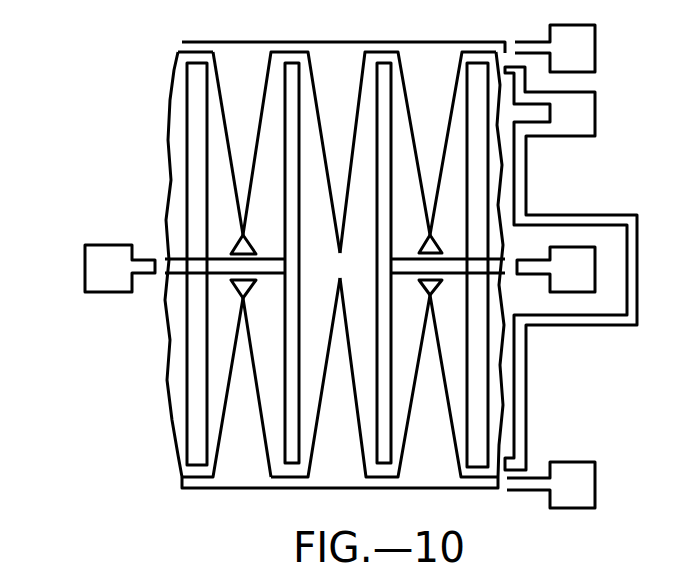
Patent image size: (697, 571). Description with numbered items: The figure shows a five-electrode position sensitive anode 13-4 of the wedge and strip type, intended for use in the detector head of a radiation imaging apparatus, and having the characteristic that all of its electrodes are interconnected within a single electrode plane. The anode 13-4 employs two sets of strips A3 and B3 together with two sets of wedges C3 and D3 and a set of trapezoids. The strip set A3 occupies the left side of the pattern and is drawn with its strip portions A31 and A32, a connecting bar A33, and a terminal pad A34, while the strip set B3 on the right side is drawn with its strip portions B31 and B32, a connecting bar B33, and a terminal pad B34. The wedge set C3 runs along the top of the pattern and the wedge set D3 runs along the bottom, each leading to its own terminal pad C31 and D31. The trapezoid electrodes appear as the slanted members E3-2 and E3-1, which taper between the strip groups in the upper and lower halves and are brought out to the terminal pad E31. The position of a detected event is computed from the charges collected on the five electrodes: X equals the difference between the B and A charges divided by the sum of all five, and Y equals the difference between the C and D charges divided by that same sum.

The five-electrode position sensitive anode 13-4 is at (102, 171).
The set of wedges C3 is at (340, 41).
The set of wedges D3 is at (283, 490).
The set of strips A3 is at (186, 344).
The left inner electrode A31 is at (197, 408).
The left middle electrode A32 is at (293, 470).
The left center bar A33 is at (223, 268).
The left connection pad A34 is at (98, 270).
The set of strips B3 is at (492, 372).
The right inner electrode B31 is at (478, 437).
The right middle electrode B32 is at (387, 470).
The right center bar B33 is at (452, 268).
The right connection pad B34 is at (588, 268).
The lower slanted electrode E3-1 is at (259, 390).
The upper slanted electrode E3-2 is at (229, 158).
The top connection pad C31 is at (586, 54).
The E electrode connection pad E31 is at (586, 118).
The bottom connection pad D31 is at (592, 491).